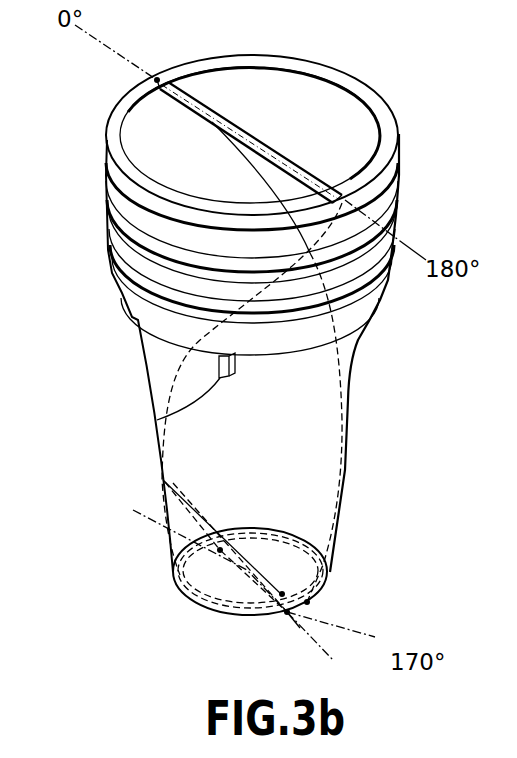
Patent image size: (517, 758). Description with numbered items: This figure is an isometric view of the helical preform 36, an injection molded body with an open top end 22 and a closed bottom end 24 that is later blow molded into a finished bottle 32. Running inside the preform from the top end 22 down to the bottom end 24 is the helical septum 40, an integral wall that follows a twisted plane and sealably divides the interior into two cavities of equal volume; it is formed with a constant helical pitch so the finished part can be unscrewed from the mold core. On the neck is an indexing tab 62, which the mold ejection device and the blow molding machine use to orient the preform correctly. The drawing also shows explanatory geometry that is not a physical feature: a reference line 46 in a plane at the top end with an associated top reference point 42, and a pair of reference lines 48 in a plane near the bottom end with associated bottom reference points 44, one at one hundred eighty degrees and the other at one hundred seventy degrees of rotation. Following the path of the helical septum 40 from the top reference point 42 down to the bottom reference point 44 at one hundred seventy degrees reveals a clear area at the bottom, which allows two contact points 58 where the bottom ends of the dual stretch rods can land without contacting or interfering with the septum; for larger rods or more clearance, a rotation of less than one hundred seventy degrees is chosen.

The top end 22 is at (292, 63).
The bottom end 24 is at (200, 604).
The bottle 32 is at (221, 4).
The helical preform 36 is at (382, 302).
The helical septum 40 is at (300, 170).
The top reference point 42 is at (159, 78).
The bottom reference point 44 is at (288, 612).
The reference line 46 is at (105, 50).
The reference line 48 is at (300, 628).
The contact points 58 is at (282, 594).
The indexing tab 62 is at (157, 420).